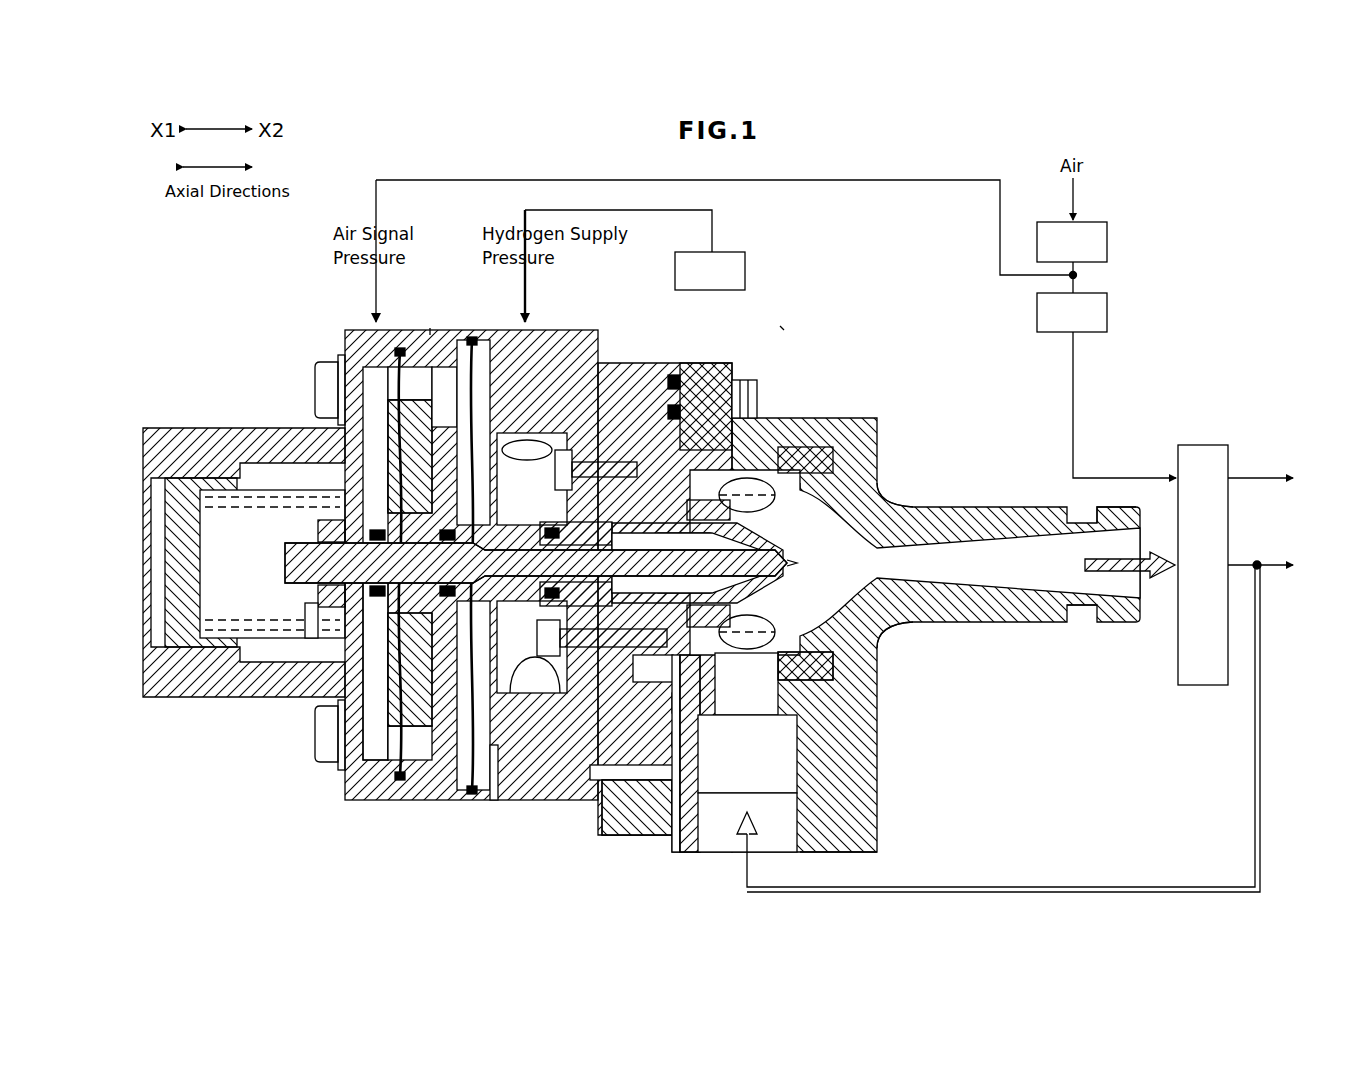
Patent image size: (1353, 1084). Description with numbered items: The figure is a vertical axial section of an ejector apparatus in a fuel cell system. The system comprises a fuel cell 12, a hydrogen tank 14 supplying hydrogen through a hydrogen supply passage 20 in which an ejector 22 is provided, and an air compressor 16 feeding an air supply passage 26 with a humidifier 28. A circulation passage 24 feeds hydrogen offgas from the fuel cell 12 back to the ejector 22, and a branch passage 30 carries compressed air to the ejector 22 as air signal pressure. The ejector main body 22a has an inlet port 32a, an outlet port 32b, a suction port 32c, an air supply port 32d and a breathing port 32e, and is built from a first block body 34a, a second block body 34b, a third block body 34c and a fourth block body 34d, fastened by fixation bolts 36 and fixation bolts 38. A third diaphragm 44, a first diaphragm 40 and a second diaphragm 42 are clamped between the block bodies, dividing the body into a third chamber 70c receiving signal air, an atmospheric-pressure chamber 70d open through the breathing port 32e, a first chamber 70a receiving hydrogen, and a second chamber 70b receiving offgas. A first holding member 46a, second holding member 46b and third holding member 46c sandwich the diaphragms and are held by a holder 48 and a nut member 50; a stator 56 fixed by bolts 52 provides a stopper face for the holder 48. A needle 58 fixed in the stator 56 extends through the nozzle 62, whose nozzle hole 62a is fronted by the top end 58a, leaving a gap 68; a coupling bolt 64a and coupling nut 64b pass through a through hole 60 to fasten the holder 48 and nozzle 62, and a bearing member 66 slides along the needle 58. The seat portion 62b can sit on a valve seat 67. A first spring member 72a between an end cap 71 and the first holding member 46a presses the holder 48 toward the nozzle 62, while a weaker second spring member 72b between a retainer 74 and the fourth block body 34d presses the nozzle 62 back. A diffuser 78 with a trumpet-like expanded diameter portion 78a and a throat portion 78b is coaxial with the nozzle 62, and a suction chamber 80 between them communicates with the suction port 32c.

The fuel cell 12 is at (1215, 446).
The hydrogen tank 14 is at (745, 272).
The air compressor 16 is at (1107, 242).
The hydrogen supply passage 20 is at (714, 211).
The ejector 22 is at (786, 326).
The ejector main body 22a is at (787, 415).
The circulation passage 24 is at (985, 888).
The air supply passage 26 is at (1074, 396).
The humidifier 28 is at (1107, 310).
The branch passage 30 is at (868, 181).
The inlet port 32a is at (545, 328).
The outlet port 32b is at (1125, 600).
The suction port 32c is at (800, 838).
The air supply port 32d is at (366, 328).
The breathing port 32e is at (432, 328).
The first block body 34a is at (270, 698).
The second block body 34b is at (430, 800).
The third block body 34c is at (520, 800).
The fourth block body 34d is at (878, 760).
The fixation bolts 36 is at (316, 372).
The fixation bolts 38 is at (748, 380).
The first diaphragm 40 is at (460, 586).
The second diaphragm 42 is at (690, 700).
The third diaphragm 44 is at (410, 740).
The first holding member 46a is at (400, 780).
The second holding member 46b is at (472, 790).
The third holding member 46c is at (494, 750).
The holder 48 is at (423, 525).
The nut member 50 is at (320, 670).
The bolts 52 is at (545, 482).
The stator 56 is at (600, 460).
The needle 58 is at (778, 465).
The top end 58a is at (905, 500).
The through hole 60 is at (575, 600).
The nozzle 62 is at (780, 560).
The nozzle hole 62a is at (800, 565).
The seat portion 62b is at (640, 650).
The coupling bolt 64a is at (605, 608).
The coupling nut 64b is at (570, 608).
The bearing member 66 is at (674, 480).
The valve seat 67 is at (644, 470).
The gap 68 is at (770, 575).
The first chamber 70a is at (583, 470).
The second chamber 70b is at (800, 612).
The third chamber 70c is at (372, 405).
The atmospheric-pressure chamber 70d is at (378, 730).
The end cap 71 is at (180, 660).
The first spring member 72a is at (205, 640).
The second spring member 72b is at (840, 668).
The retainer 74 is at (723, 762).
The diffuser 78 is at (1055, 555).
The expanded diameter portion 78a is at (885, 640).
The throat portion 78b is at (1035, 605).
The suction chamber 80 is at (763, 704).